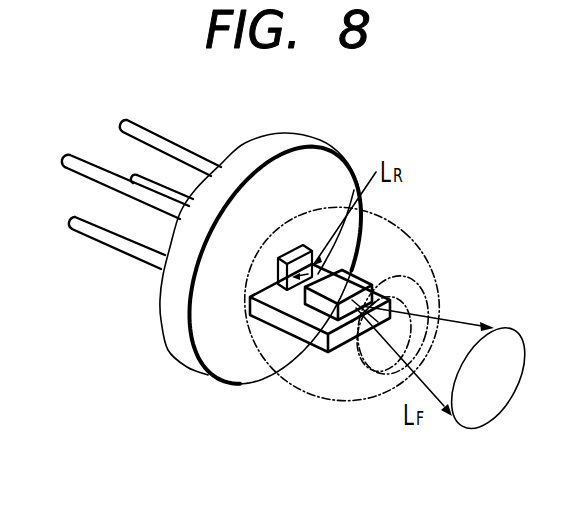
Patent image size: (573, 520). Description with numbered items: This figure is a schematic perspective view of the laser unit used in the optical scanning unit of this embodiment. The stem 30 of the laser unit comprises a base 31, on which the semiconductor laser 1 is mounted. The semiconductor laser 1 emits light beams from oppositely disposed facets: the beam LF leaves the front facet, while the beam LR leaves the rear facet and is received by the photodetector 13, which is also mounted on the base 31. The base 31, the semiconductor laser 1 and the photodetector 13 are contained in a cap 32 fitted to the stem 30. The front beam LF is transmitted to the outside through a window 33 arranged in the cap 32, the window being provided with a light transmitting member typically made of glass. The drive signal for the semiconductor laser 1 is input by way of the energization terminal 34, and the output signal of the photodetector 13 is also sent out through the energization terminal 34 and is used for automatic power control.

The semiconductor laser 1 is at (320, 307).
The photodetector 13 is at (296, 250).
The stem 30 is at (253, 146).
The base 31 is at (277, 321).
The cap 32 is at (384, 228).
The window 33 is at (418, 281).
The energization terminal 34 is at (170, 139).